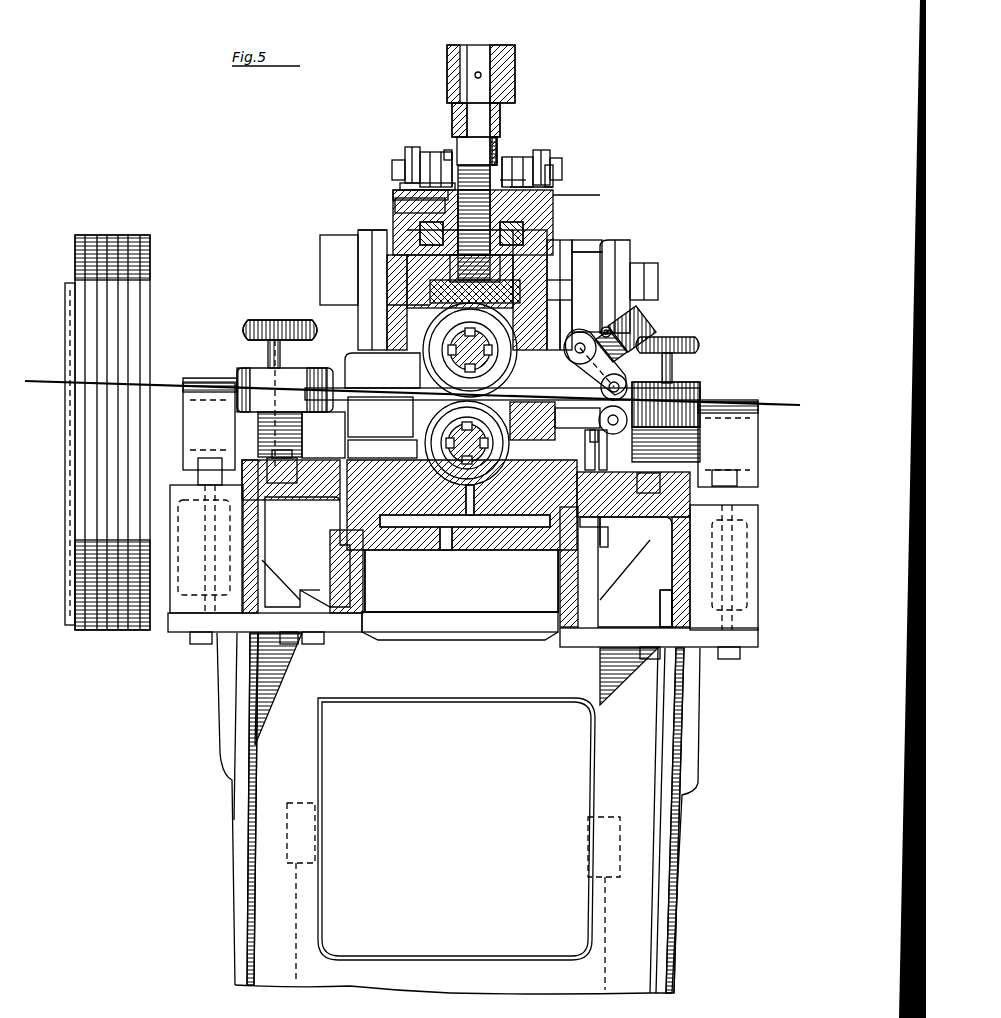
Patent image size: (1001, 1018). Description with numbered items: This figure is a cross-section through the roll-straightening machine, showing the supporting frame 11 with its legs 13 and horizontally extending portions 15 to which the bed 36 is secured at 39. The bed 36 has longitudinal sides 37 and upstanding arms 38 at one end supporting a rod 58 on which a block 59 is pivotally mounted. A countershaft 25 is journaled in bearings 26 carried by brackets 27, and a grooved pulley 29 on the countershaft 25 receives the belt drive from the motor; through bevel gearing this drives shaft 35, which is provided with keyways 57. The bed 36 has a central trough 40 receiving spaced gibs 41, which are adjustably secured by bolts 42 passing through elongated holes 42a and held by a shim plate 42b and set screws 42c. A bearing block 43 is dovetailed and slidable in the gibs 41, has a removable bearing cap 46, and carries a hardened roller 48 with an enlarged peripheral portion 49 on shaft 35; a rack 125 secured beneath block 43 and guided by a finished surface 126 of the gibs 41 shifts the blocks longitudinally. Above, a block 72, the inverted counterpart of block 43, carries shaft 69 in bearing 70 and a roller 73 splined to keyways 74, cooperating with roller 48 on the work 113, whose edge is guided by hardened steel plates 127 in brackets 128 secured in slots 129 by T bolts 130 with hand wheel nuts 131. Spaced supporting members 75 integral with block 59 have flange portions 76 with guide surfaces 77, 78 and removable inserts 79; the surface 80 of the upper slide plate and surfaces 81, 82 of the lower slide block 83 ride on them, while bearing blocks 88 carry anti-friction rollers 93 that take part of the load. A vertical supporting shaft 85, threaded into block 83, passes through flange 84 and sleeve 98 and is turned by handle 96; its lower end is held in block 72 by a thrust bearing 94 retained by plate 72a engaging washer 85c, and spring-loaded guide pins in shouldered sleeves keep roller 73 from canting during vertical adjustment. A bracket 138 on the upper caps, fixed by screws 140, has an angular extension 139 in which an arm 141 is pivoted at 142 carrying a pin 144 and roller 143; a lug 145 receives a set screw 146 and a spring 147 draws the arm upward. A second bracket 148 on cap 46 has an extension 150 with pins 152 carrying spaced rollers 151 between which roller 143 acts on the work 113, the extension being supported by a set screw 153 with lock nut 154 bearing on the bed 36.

The supporting frame 11 is at (707, 700).
The legs 13 is at (678, 880).
The horizontally extending portions 15 is at (318, 644).
The countershaft 25 is at (750, 443).
The bearings 26 is at (195, 378).
The brackets 27 is at (172, 563).
The grooved pulley 29 is at (150, 250).
The shaft 35 is at (370, 402).
The bed 36 is at (233, 568).
The sides 37 is at (225, 545).
The arms 38 is at (618, 245).
The securing points 39 is at (330, 640).
The trough 40 is at (400, 525).
The gibs 41 is at (335, 530).
The bolts 42 is at (465, 571).
The elongated holes 42a is at (293, 573).
The shim plate 42b is at (306, 552).
The set screws 42c is at (672, 505).
The bearing block 43 is at (490, 527).
The removable cap 46 is at (425, 402).
The roller 48 is at (445, 550).
The enlarged peripheral portion 49 is at (487, 587).
The keyways 57 is at (445, 440).
The rod 58 is at (656, 272).
The block 59 is at (590, 242).
The shaft 69 is at (552, 312).
The bearing 70 is at (384, 353).
The block 72 is at (548, 240).
The plate 72a is at (460, 268).
The roller 73 is at (405, 330).
The keyways 74 is at (545, 330).
The supporting members 75 is at (393, 213).
The flange portions 76 is at (398, 202).
The guide surfaces 77 is at (455, 125).
The guide surfaces 78 is at (395, 196).
The removable insert 79 is at (556, 190).
The surface 80 is at (415, 160).
The surface 81 is at (400, 188).
The surface 82 is at (553, 175).
The lower slide block 83 is at (446, 152).
The flange 84 is at (526, 157).
The vertical supporting shaft 85 is at (488, 60).
The washer 85c is at (587, 190).
The bearing blocks 88 is at (435, 152).
The anti-friction rollers 93 is at (405, 155).
The thrust bearing 94 is at (430, 290).
The handle 96 is at (447, 56).
The sleeve 98 is at (498, 140).
The work 113 is at (170, 370).
The rack 125 is at (462, 527).
The finished surface 126 is at (448, 583).
The hardened steel plates 127 is at (479, 437).
The brackets 128 is at (245, 370).
The slots 129 is at (356, 420).
The T bolts 130 is at (636, 345).
The hand wheel nuts 131 is at (265, 320).
The bracket 138 is at (590, 340).
The angular extension 139 is at (610, 330).
The screws 140 is at (360, 363).
The arm 141 is at (502, 392).
The pivot 142 is at (590, 335).
The roller 143 is at (668, 382).
The pin 144 is at (368, 410).
The lug 145 is at (662, 323).
The set screw 146 is at (625, 335).
The spring 147 is at (591, 417).
The second bracket 148 is at (555, 427).
The extension 150 is at (598, 450).
The rollers 151 is at (604, 526).
The pins 152 is at (615, 520).
The set screw 153 is at (614, 540).
The lock nut 154 is at (605, 440).